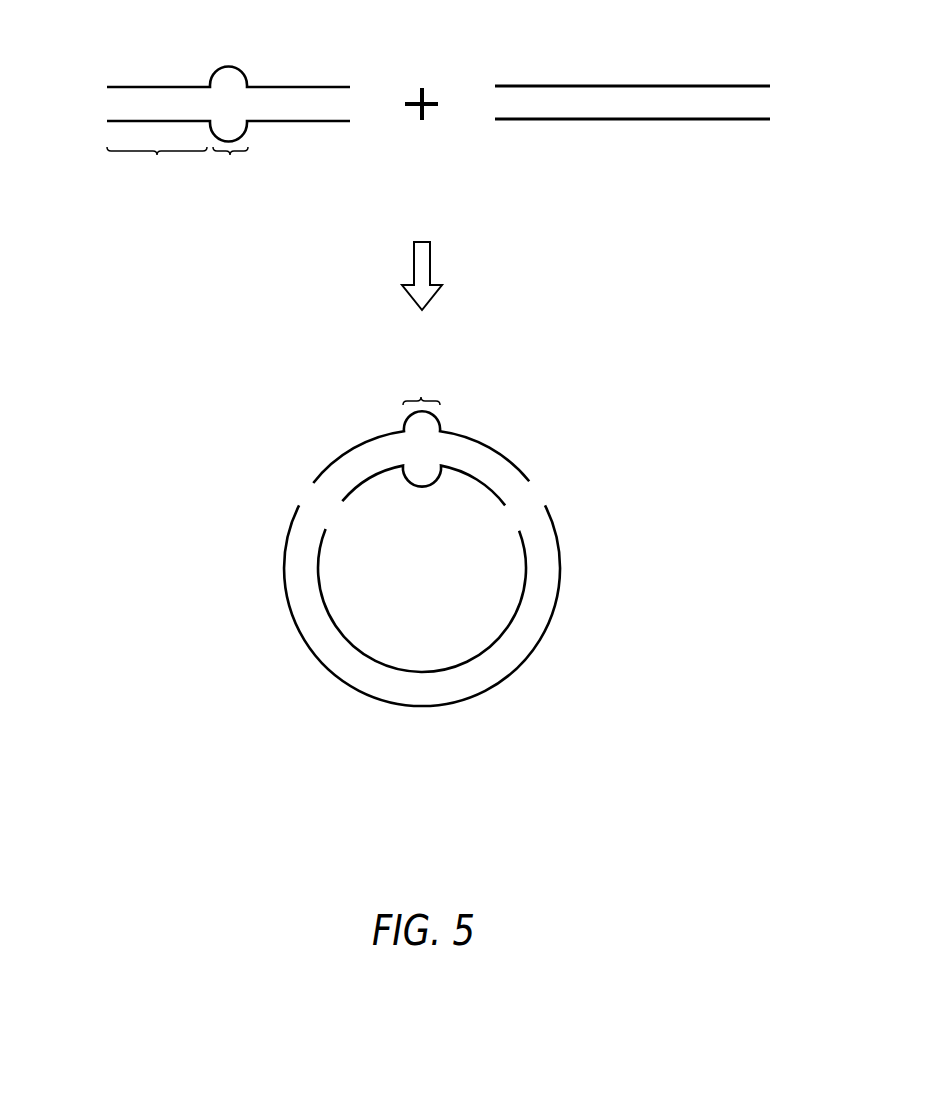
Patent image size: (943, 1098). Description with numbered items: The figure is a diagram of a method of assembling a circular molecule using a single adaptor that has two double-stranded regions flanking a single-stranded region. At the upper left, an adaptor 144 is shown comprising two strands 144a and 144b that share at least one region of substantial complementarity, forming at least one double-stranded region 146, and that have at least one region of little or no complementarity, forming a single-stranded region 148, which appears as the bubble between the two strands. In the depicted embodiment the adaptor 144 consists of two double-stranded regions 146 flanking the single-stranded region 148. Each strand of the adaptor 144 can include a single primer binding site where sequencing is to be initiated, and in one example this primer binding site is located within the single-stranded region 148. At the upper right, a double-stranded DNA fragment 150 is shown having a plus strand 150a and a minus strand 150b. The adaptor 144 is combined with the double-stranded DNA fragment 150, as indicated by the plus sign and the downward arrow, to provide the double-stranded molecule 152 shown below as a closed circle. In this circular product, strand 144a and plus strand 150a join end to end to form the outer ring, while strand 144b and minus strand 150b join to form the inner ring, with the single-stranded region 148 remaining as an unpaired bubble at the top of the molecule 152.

The adaptor 144 is at (318, 271).
The strand 144a is at (293, 87).
The strand 144b is at (303, 121).
The double-stranded region 146 is at (157, 167).
The single-stranded region 148 is at (330, 276).
The double-stranded DNA fragment 150 is at (542, 358).
The plus strand 150a is at (583, 86).
The minus strand 150b is at (603, 119).
The double-stranded molecule 152 is at (426, 358).